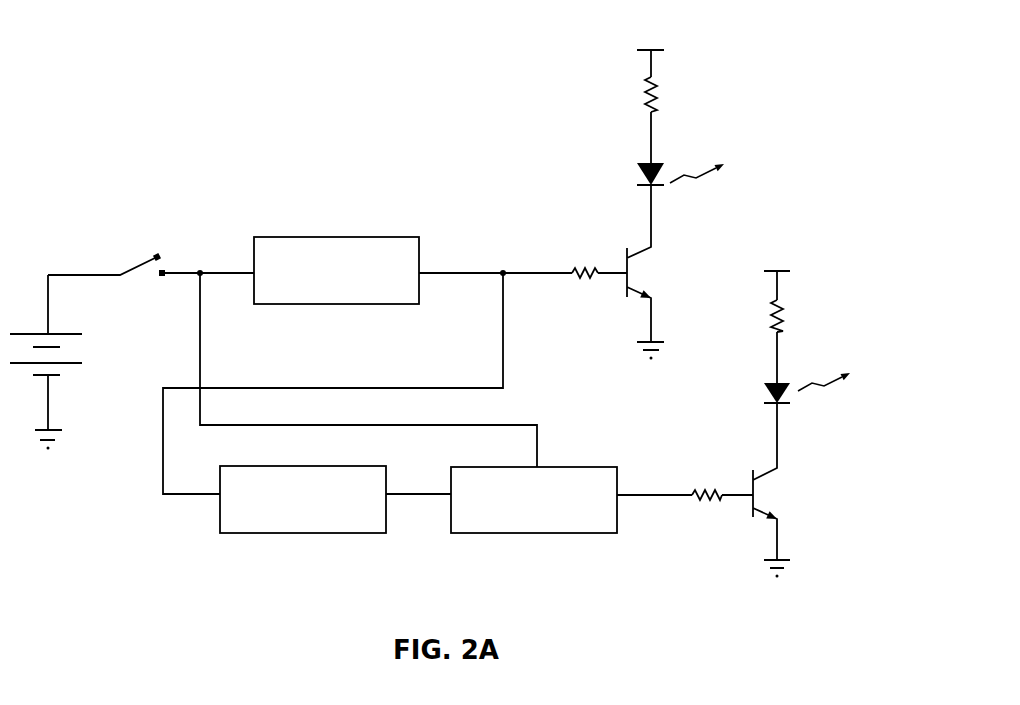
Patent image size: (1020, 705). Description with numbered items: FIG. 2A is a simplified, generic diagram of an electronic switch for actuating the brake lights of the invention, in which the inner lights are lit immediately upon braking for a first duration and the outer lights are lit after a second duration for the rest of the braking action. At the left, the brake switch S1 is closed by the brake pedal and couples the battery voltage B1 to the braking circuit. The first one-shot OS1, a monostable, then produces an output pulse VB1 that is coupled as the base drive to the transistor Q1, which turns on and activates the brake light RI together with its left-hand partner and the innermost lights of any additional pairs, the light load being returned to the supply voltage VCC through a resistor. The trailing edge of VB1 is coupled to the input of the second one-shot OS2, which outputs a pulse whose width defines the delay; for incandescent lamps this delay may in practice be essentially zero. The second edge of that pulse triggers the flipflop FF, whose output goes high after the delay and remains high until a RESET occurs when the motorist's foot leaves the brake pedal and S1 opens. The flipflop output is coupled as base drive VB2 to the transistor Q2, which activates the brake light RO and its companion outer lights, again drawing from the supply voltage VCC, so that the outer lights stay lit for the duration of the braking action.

The battery voltage B1 is at (57, 362).
The brake switch S1 is at (151, 251).
The first one-shot OS1 is at (336, 270).
The second one-shot OS2 is at (303, 499).
The flipflop FF is at (534, 500).
The reset RESET is at (543, 446).
The OS1 output pulse VB1 is at (475, 268).
The base drive to transistor Q2 VB2 is at (636, 485).
The transistor Q1 is at (658, 272).
The transistor Q2 is at (784, 490).
The supply voltage VCC is at (712, 128).
The brake light RI is at (687, 117).
The brake light RO is at (825, 337).